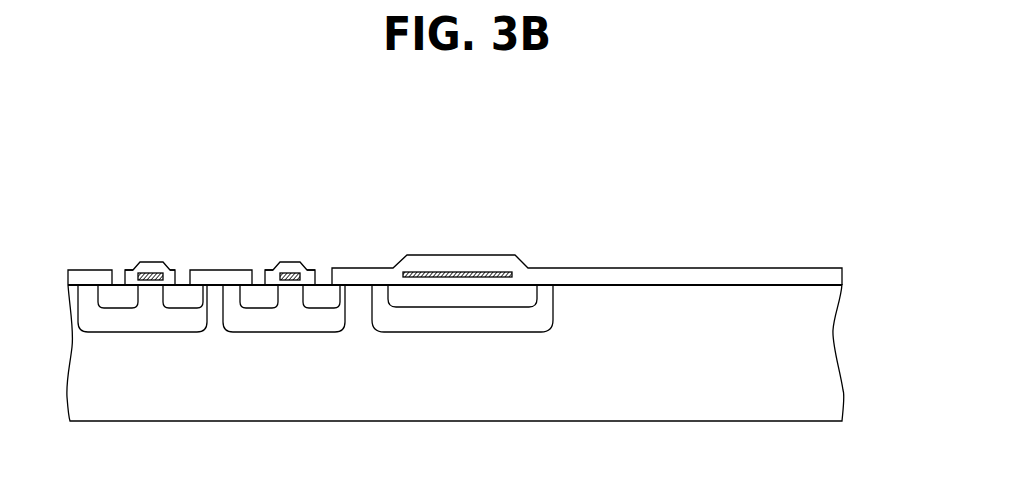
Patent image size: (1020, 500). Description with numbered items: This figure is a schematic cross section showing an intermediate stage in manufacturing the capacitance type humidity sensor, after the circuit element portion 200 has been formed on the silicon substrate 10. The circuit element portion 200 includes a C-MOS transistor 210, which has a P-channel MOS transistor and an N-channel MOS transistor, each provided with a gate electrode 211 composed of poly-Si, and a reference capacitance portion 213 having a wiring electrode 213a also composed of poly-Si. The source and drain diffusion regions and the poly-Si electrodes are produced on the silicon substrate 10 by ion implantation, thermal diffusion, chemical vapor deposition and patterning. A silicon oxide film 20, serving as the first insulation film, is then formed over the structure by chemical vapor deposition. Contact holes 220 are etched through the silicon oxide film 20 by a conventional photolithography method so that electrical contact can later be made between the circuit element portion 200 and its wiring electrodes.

The silicon substrate 10 is at (828, 390).
The silicon oxide film 20 is at (828, 275).
The circuit element portion 200 is at (530, 130).
The C-MOS transistor 210 is at (368, 187).
The gate electrode 211 is at (152, 275).
The reference capacitance portion 213 is at (535, 188).
The wiring electrode 213a is at (456, 273).
The contact holes 220 is at (115, 278).